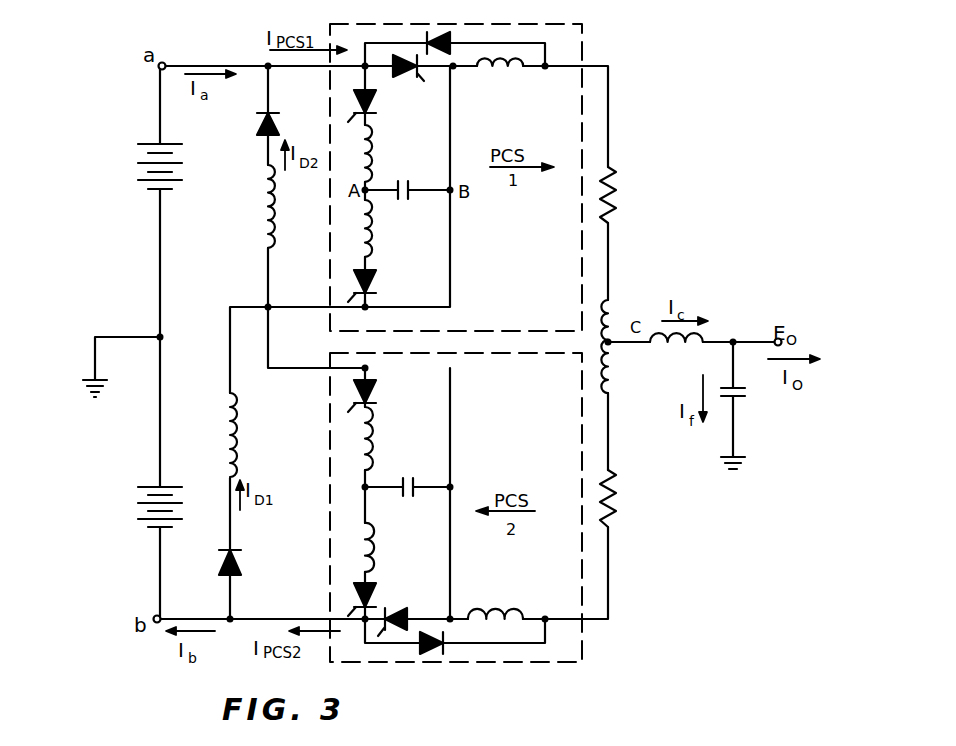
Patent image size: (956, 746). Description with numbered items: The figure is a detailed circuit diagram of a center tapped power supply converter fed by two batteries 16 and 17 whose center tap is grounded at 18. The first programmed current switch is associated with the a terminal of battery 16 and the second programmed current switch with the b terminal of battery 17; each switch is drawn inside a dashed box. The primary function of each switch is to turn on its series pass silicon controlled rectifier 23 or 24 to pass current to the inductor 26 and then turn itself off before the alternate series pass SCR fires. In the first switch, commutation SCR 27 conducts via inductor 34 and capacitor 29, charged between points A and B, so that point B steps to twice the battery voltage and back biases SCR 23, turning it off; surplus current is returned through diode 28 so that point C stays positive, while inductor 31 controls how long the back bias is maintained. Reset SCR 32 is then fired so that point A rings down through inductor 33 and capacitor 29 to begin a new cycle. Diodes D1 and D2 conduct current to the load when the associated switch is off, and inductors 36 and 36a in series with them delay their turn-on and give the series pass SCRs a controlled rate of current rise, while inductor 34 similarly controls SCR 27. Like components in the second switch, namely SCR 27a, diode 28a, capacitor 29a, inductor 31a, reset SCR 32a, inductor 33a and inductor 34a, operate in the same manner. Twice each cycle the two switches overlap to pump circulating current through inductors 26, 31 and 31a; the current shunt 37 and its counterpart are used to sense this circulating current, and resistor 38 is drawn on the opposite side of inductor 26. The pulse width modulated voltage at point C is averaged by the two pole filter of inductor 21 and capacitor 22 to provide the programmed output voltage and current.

The battery 16 is at (135, 162).
The battery 17 is at (135, 504).
The ground 18 is at (92, 358).
The inductor 21 is at (670, 354).
The capacitor 22 is at (756, 398).
The series pass silicon controlled rectifier 23 is at (408, 76).
The series pass silicon controlled rectifier 24 is at (395, 606).
The inductor 26 is at (612, 302).
The commutation silicon controlled rectifier 27 is at (355, 106).
The commutation silicon controlled rectifier 27a is at (355, 600).
The diode 28 is at (437, 32).
The diode 28a is at (440, 660).
The capacitor 29 is at (404, 200).
The capacitor 29a is at (406, 500).
The inductor 31 is at (502, 78).
The inductor 31a is at (492, 608).
The reset silicon controlled rectifier 32 is at (378, 284).
The reset silicon controlled rectifier 32a is at (378, 393).
The inductor 33 is at (357, 250).
The inductor 33a is at (374, 447).
The inductor 34 is at (372, 160).
The inductor 34a is at (357, 535).
The inductor 36 is at (240, 432).
The inductor 36a is at (257, 213).
The current shunt 37 is at (615, 190).
The resistor 38 is at (615, 494).
The diode D1 is at (245, 563).
The diode D2 is at (253, 126).